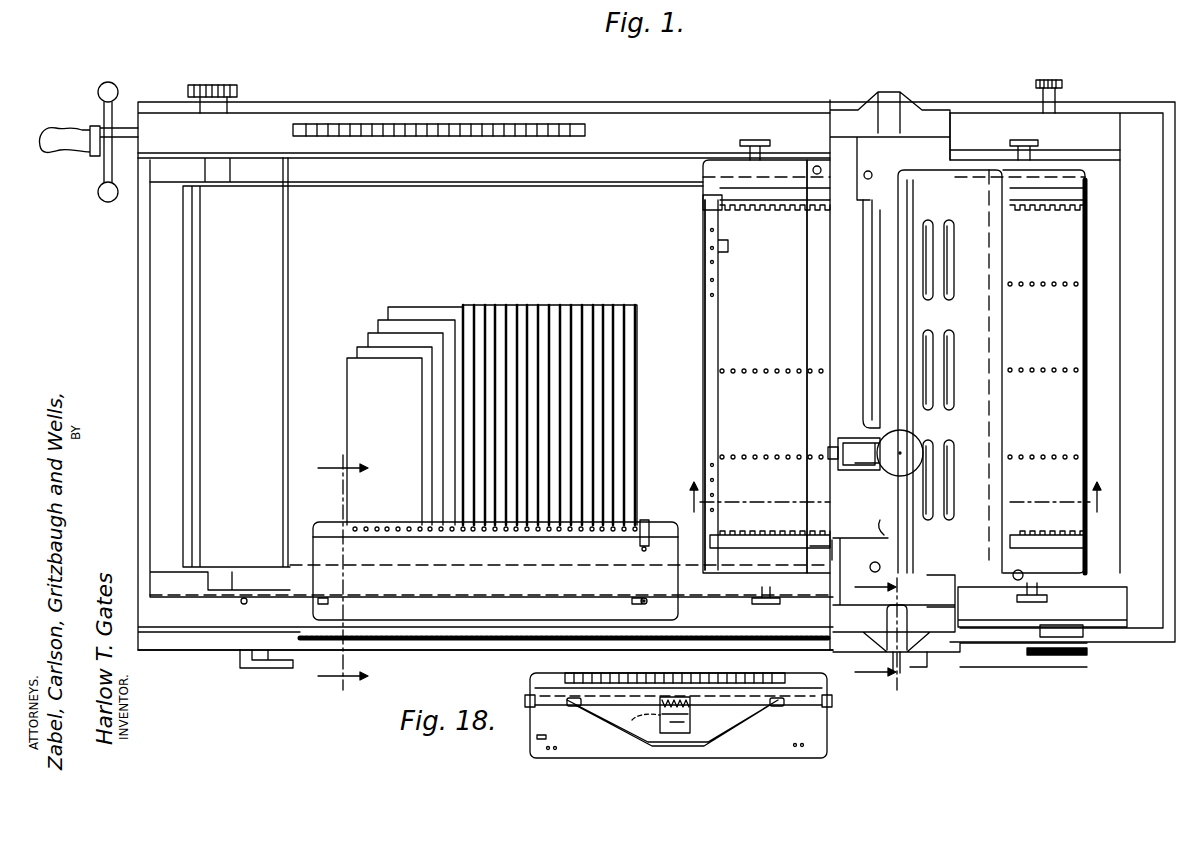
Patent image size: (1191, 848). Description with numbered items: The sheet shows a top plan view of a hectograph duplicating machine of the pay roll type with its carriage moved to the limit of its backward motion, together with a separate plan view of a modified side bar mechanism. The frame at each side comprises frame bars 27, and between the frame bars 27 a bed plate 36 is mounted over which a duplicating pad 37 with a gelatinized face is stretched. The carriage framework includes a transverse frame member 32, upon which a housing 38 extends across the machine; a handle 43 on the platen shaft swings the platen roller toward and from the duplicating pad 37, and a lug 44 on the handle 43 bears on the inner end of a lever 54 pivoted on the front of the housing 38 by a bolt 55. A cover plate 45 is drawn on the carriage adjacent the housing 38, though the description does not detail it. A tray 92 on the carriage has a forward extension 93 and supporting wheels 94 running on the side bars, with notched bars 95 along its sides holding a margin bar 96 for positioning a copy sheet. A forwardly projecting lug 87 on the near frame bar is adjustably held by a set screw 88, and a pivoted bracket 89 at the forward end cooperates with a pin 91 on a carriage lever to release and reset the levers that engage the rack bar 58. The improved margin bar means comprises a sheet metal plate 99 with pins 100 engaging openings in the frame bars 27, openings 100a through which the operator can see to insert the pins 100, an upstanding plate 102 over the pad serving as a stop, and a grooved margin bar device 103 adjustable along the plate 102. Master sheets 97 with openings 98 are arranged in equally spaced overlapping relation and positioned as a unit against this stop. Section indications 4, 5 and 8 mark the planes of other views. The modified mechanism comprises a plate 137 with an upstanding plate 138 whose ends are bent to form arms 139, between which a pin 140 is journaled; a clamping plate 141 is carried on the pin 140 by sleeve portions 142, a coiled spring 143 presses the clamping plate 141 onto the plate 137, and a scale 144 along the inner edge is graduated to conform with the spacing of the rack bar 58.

In FIG. 1, the frame bar 27 is at (262, 128).
In FIG. 1, the transverse frame member 32 is at (838, 122).
In FIG. 1, the bed plate 36 is at (622, 158).
In FIG. 1, the duplicating pad 37 is at (390, 196).
In FIG. 1, the housing 38 is at (840, 312).
In FIG. 1, the handle 43 is at (890, 462).
In FIG. 1, the lug 44 is at (838, 445).
In FIG. 1, the cover plate 45 is at (975, 240).
In FIG. 1, the lever 54 is at (836, 520).
In FIG. 1, the bolt 55 is at (815, 548).
In FIG. 1, the rack bar 58 is at (413, 645).
In FIG. 1, the lug 87 is at (952, 667).
In FIG. 1, the set screw 88 is at (1062, 656).
In FIG. 1, the bracket 89 is at (285, 668).
In FIG. 1, the pin 91 is at (897, 675).
In FIG. 1, the tray 92 is at (1090, 250).
In FIG. 1, the forward extension 93 is at (718, 325).
In FIG. 1, the supporting wheels 94 is at (748, 140).
In FIG. 1, the notched bars 95 is at (716, 207).
In FIG. 1, the margin bar 96 is at (712, 416).
In FIG. 1, the master sheets 97 is at (578, 305).
In FIG. 1, the openings 98 is at (460, 532).
In FIG. 1, the sheet metal plate 99 is at (566, 612).
In FIG. 1, the pins 100 is at (648, 600).
In FIG. 1, the openings 100a is at (632, 603).
In FIG. 1, the upstanding plate 102 is at (515, 532).
In FIG. 1, the margin bar device 103 is at (655, 518).
In FIG. 1, the section line 4 is at (868, 632).
In FIG. 1, the section line 5 is at (895, 500).
In FIG. 1, the section line 8 is at (343, 576).
In FIG. 18, the plate 137 is at (797, 678).
In FIG. 18, the upstanding plate 138 is at (548, 690).
In FIG. 18, the arms 139 is at (527, 707).
In FIG. 18, the pin 140 is at (718, 708).
In FIG. 18, the clamping plate 141 is at (628, 722).
In FIG. 18, the sleeve portions 142 is at (552, 704).
In FIG. 18, the coiled spring 143 is at (620, 718).
In FIG. 18, the scale 144 is at (635, 678).